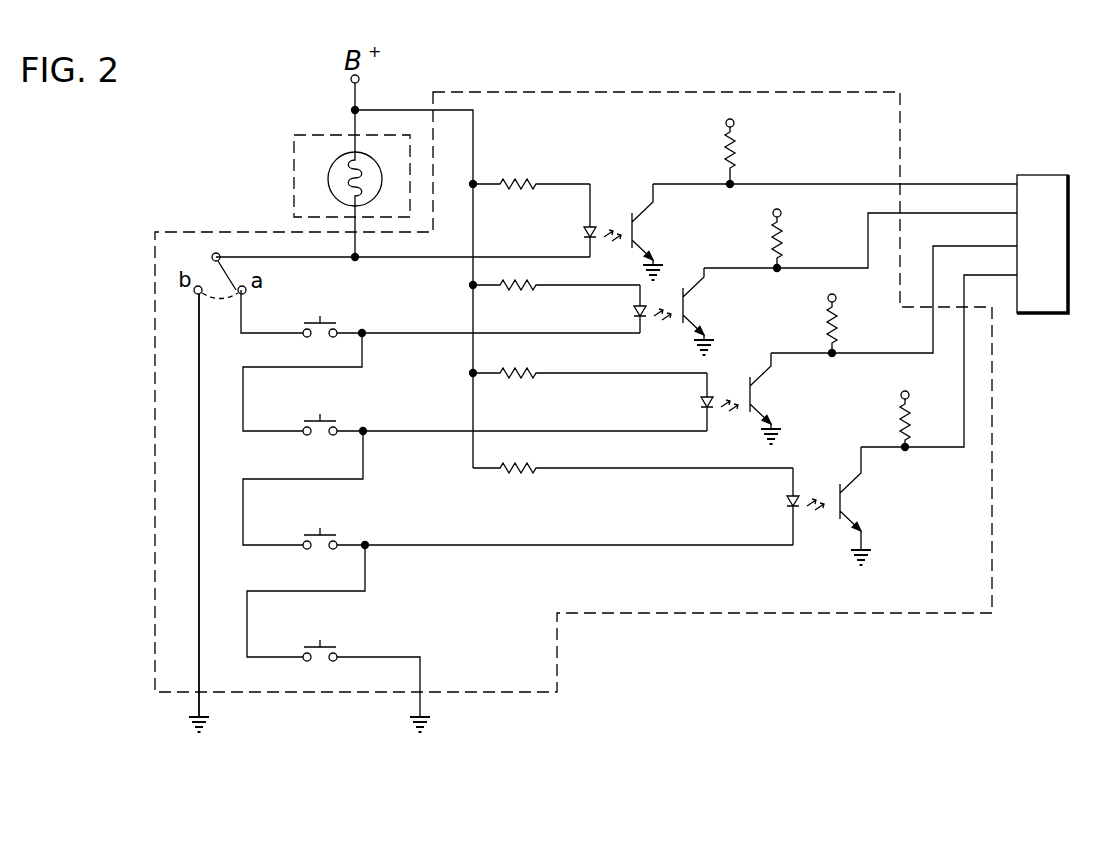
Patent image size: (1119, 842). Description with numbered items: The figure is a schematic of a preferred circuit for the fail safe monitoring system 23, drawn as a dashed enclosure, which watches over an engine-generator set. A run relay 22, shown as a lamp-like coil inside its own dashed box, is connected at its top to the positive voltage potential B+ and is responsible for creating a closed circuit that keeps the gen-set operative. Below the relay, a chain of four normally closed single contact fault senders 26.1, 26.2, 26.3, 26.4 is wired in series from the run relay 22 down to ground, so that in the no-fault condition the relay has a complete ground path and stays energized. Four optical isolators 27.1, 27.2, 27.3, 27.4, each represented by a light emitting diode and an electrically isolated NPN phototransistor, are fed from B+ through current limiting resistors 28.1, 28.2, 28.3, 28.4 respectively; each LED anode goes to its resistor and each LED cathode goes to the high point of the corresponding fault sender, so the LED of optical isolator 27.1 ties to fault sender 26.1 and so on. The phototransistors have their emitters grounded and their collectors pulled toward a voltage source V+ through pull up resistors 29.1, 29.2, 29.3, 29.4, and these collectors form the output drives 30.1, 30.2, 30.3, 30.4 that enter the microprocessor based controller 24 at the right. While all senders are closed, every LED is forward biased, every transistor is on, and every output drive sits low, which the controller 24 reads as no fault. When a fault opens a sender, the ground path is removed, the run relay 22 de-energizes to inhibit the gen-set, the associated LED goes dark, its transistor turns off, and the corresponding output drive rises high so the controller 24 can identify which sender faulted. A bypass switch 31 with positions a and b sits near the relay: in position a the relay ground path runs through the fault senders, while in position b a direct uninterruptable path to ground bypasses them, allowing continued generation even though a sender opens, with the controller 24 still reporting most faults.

The run relay 22 is at (294, 160).
The fail safe monitoring system 23 is at (900, 140).
The microprocessor based controller 24 is at (1068, 222).
The single contact fault sender 26.1 is at (339, 316).
The single contact fault sender 26.2 is at (342, 414).
The single contact fault sender 26.3 is at (343, 530).
The single contact fault sender 26.4 is at (344, 641).
The optical isolator 27.1 is at (623, 232).
The optical isolator 27.2 is at (674, 314).
The optical isolator 27.3 is at (741, 400).
The optical isolator 27.4 is at (829, 506).
The current limiting resistor 28.1 is at (531, 185).
The current limiting resistor 28.2 is at (556, 287).
The current limiting resistor 28.3 is at (590, 373).
The current limiting resistor 28.4 is at (633, 469).
The pull up resistor 29.1 is at (744, 141).
The pull up resistor 29.2 is at (792, 228).
The pull up resistor 29.3 is at (846, 314).
The pull up resistor 29.4 is at (919, 407).
The output drive 30.1 is at (835, 174).
The output drive 30.2 is at (860, 229).
The output drive 30.3 is at (894, 288).
The output drive 30.4 is at (939, 350).
The bypass switch 31 is at (212, 256).